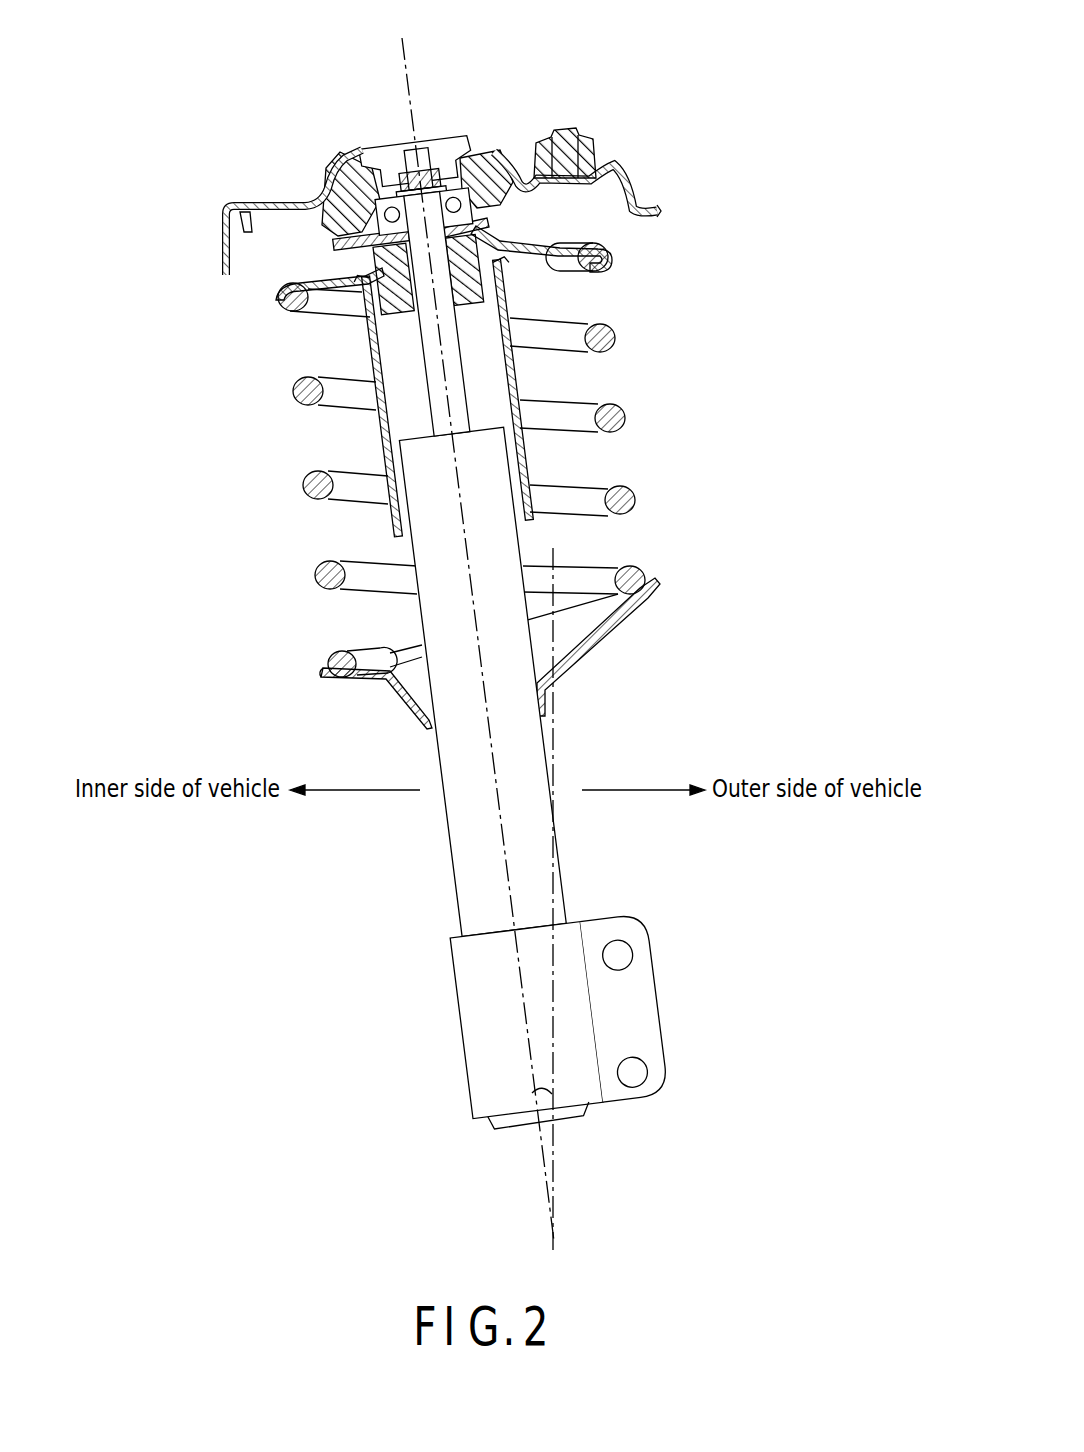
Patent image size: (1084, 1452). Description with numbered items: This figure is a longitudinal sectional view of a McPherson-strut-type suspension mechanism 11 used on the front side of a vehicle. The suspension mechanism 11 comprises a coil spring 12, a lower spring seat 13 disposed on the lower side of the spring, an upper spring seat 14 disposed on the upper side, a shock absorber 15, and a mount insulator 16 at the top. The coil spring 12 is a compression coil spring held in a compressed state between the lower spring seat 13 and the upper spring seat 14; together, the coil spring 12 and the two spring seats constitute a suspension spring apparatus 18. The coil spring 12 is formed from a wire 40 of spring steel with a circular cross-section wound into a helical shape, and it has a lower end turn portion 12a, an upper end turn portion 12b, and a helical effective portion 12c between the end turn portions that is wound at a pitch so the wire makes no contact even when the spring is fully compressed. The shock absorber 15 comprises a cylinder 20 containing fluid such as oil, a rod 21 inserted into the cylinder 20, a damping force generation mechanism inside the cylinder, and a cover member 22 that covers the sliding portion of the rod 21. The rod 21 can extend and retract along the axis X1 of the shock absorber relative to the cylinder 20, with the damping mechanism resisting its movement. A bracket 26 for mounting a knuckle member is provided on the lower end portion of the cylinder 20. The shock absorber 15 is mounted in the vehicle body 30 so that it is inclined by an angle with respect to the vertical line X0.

The suspension mechanism 11 is at (652, 46).
The coil spring 12 is at (646, 440).
The lower end turn portion 12a is at (646, 574).
The upper end turn portion 12b is at (612, 263).
The effective portion 12c is at (628, 417).
The lower spring seat 13 is at (590, 630).
The upper spring seat 14 is at (536, 240).
The shock absorber 15 is at (530, 540).
The mount insulator 16 is at (358, 166).
The suspension spring apparatus 18 is at (292, 445).
The cylinder 20 is at (434, 621).
The rod 21 is at (415, 345).
The cover member 22 is at (521, 368).
The bracket 26 is at (645, 1013).
The vehicle body 30 is at (222, 236).
The wire 40 is at (618, 338).
The vertical line X0 is at (558, 731).
The axis of the shock absorber X1 is at (502, 856).